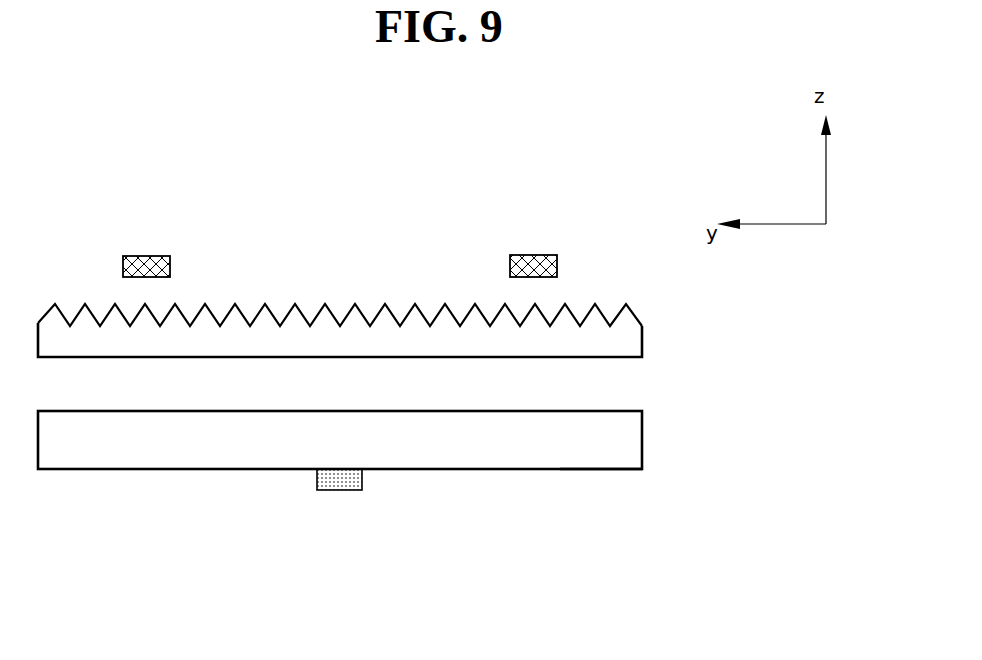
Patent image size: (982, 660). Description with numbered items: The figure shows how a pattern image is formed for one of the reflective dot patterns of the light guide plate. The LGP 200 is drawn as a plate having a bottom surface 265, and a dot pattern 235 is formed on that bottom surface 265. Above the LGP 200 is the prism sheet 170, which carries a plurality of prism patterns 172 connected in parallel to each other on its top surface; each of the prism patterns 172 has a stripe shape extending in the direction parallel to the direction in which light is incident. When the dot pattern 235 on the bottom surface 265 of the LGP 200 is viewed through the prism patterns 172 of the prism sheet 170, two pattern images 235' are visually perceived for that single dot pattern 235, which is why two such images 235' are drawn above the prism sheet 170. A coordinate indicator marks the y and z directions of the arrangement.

The prism sheet 170 is at (630, 342).
The prism patterns 172 is at (633, 311).
The LGP 200 is at (630, 432).
The bottom surface 265 is at (613, 469).
The dot patterns 235 is at (339, 518).
The pattern images 235' is at (340, 227).